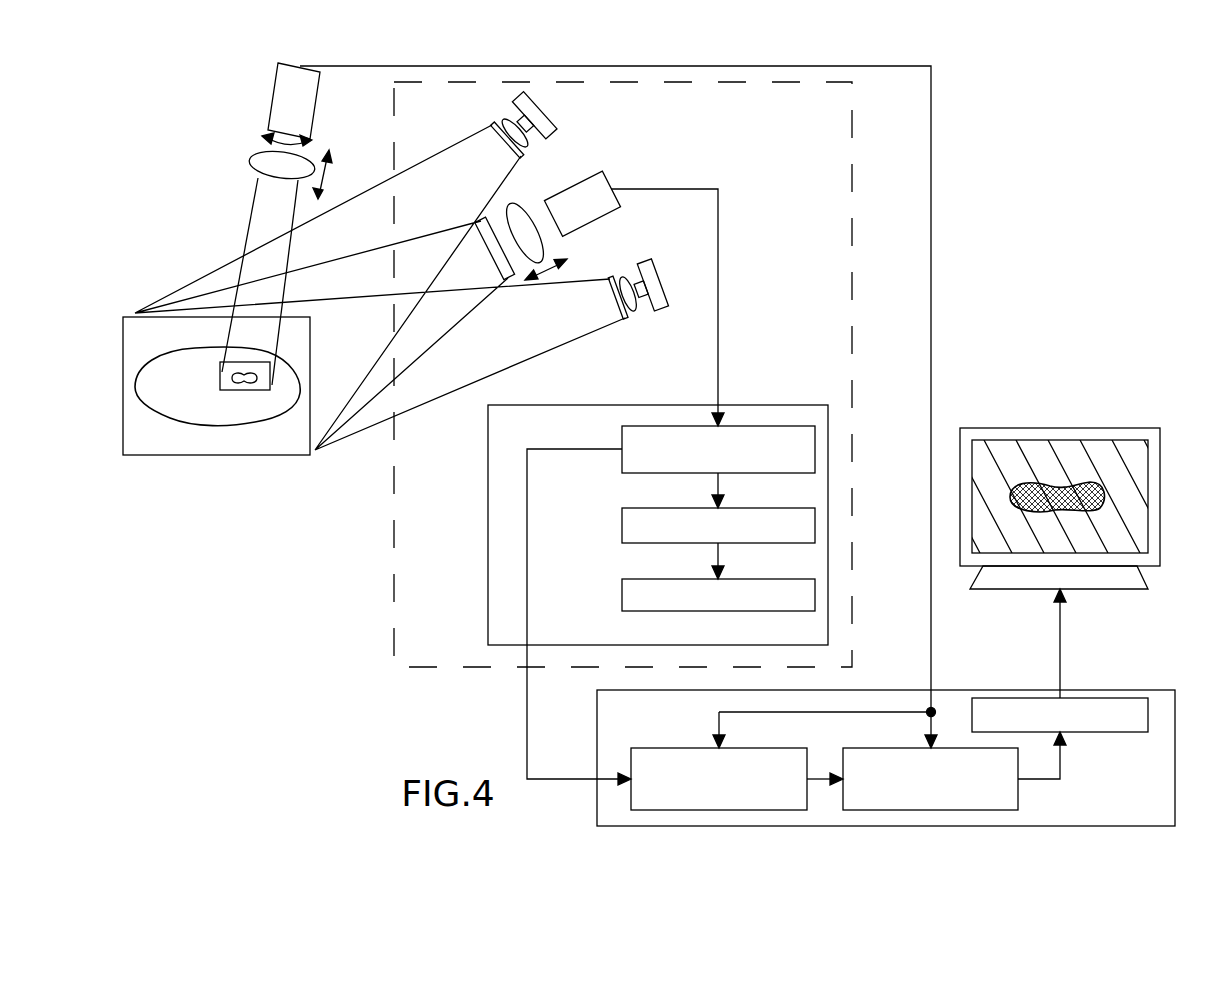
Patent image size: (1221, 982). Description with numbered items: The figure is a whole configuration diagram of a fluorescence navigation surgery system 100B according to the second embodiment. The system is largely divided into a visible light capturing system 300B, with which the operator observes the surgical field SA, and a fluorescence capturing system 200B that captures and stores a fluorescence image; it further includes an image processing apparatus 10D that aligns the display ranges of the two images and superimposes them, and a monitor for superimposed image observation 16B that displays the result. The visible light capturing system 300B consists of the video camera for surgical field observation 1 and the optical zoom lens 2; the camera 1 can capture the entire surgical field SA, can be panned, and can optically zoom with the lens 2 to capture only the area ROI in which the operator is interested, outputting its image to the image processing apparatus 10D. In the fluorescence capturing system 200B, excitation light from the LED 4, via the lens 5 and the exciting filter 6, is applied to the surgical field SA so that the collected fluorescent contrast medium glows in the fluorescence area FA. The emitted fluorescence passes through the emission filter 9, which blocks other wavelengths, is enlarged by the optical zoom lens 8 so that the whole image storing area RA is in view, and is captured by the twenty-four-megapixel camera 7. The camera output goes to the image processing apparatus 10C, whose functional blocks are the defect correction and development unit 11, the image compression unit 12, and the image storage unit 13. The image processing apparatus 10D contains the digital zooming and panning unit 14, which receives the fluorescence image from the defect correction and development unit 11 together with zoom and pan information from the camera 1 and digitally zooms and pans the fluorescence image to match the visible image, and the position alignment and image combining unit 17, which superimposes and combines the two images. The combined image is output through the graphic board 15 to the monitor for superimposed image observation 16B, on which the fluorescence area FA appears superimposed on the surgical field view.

The fluorescence navigation surgery system 100B is at (1090, 129).
The visible light capturing system 300B is at (214, 100).
The video camera for surgical field observation 1 is at (276, 84).
The optical zoom lens 2 is at (249, 164).
The LED 4 is at (552, 116).
The lens 5 is at (528, 148).
The exciting filter 6 is at (492, 128).
The 24M pixel camera 7 is at (612, 187).
The optical zoom lens 8 is at (543, 248).
The emission filter 9 is at (512, 290).
The image processing apparatus 10C is at (795, 405).
The image processing apparatus 10D is at (1160, 690).
The defect correction and development unit 11 is at (760, 473).
The image compression unit 12 is at (760, 543).
The image storage unit 13 is at (760, 611).
The digital zooming and panning unit 14 is at (682, 748).
The graphic board 15 is at (1114, 735).
The monitor for superimposed image observation 16B is at (1096, 428).
The position alignment and image combining unit 17 is at (894, 748).
The fluorescence capturing system 200B is at (458, 670).
The image storing area RA is at (147, 456).
The surgical field SA is at (200, 428).
The area in which the operator is interested ROI is at (257, 391).
The fluorescence area FA is at (270, 380).